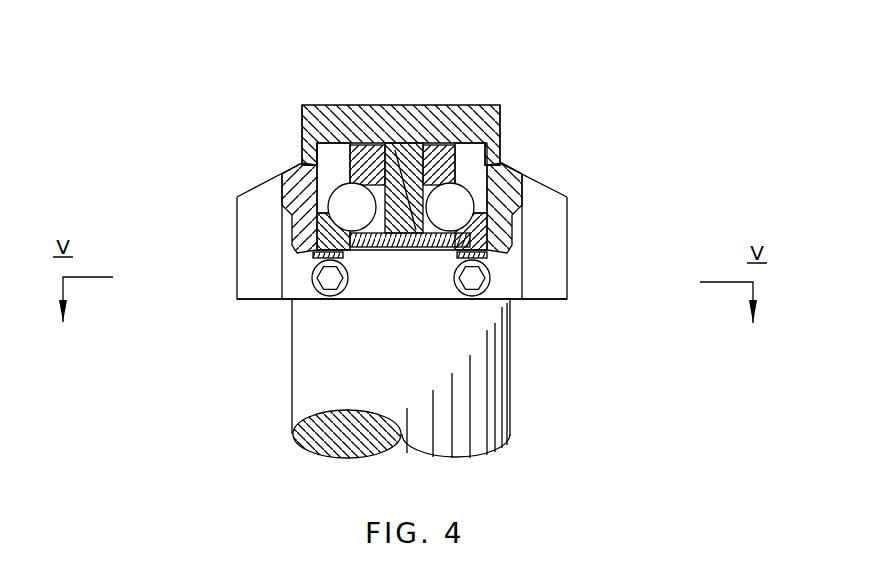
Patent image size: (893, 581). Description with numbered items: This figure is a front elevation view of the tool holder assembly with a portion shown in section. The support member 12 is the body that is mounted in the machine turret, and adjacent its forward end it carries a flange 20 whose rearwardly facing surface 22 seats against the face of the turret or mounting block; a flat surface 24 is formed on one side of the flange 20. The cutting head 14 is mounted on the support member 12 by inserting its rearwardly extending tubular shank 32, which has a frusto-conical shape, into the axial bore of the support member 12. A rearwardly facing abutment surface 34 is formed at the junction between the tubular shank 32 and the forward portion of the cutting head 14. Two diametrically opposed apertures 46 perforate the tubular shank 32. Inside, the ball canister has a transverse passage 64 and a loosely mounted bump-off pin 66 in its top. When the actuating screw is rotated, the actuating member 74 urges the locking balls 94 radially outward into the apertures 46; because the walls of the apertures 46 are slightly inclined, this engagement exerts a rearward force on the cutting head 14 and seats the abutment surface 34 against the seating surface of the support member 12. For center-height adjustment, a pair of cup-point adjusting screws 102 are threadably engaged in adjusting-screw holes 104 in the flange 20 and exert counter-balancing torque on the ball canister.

The support member 12 is at (520, 429).
The cutting head 14 is at (331, 105).
The flange 20 is at (560, 187).
The rearwardly facing surface 22 is at (545, 302).
The flat surface 24 is at (400, 258).
The tubular shank 32 is at (295, 221).
The abutment surface 34 is at (300, 124).
The apertures 46 is at (325, 178).
The transverse passage 64 is at (480, 250).
The bump-off pin 66 is at (406, 108).
The actuating member 74 is at (483, 106).
The locking balls 94 is at (340, 219).
The adjusting screws 102 is at (320, 299).
The adjusting-screw holes 104 is at (311, 286).